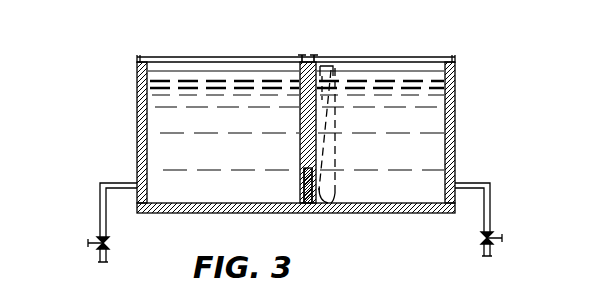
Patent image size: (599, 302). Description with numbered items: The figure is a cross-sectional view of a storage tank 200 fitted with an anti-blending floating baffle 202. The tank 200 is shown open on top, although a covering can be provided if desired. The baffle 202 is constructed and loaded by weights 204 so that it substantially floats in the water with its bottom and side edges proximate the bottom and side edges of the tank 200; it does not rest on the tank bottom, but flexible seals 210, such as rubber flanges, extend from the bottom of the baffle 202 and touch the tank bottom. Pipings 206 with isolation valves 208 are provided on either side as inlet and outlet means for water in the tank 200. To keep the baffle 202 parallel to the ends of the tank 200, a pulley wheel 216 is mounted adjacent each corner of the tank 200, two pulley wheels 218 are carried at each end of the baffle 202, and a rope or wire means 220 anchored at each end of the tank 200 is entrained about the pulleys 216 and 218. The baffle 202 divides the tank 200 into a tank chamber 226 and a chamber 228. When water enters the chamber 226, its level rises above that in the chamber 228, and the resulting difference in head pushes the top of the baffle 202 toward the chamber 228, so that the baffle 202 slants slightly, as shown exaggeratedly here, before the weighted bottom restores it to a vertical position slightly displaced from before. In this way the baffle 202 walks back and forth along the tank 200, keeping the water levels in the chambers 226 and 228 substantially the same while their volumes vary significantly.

The tank 200 is at (289, 139).
The floating baffle 202 is at (326, 60).
The weights 204 is at (325, 203).
The pipings 206 is at (100, 203).
The isolation valves 208 is at (88, 243).
The flexible seals 210 is at (305, 213).
The pulley wheel 216 is at (453, 60).
The pulley wheels 218 is at (314, 55).
The rope or wire means 220 is at (418, 57).
The tank chamber 226 is at (160, 122).
The chamber 228 is at (440, 121).